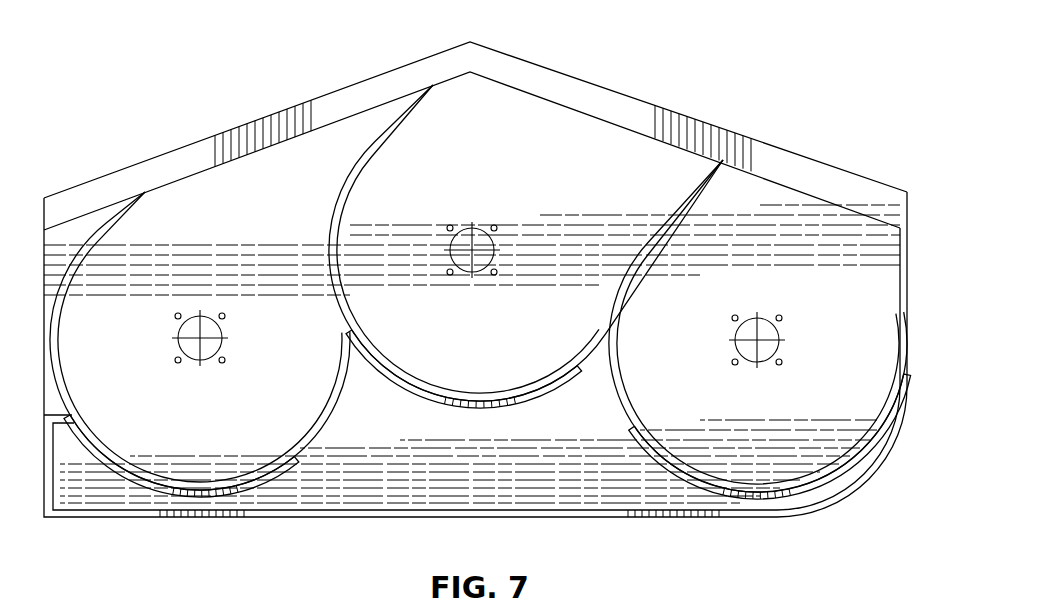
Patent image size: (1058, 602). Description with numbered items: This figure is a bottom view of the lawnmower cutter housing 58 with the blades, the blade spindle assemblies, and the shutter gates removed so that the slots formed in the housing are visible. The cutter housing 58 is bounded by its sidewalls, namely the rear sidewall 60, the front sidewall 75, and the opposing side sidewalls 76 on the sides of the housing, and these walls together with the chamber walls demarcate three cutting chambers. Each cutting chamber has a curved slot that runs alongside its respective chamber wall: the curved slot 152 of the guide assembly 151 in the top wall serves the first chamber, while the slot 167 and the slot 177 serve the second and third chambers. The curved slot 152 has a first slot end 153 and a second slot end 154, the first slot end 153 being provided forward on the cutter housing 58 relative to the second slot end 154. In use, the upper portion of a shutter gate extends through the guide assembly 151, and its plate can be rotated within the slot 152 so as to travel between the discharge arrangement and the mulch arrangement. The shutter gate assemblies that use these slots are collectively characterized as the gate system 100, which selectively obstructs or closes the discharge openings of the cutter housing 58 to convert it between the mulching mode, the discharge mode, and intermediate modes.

The cutter housing 58 is at (810, 150).
The front sidewall 75 is at (632, 95).
The side sidewall 76 is at (908, 312).
The rear sidewall 60 is at (143, 520).
The gate system 100 is at (340, 601).
The guide assembly 151 is at (196, 315).
The curved slot 152 is at (118, 218).
The first slot end 153 is at (143, 196).
The second slot end 154 is at (294, 462).
The slot 167 is at (378, 146).
The slot 177 is at (635, 280).